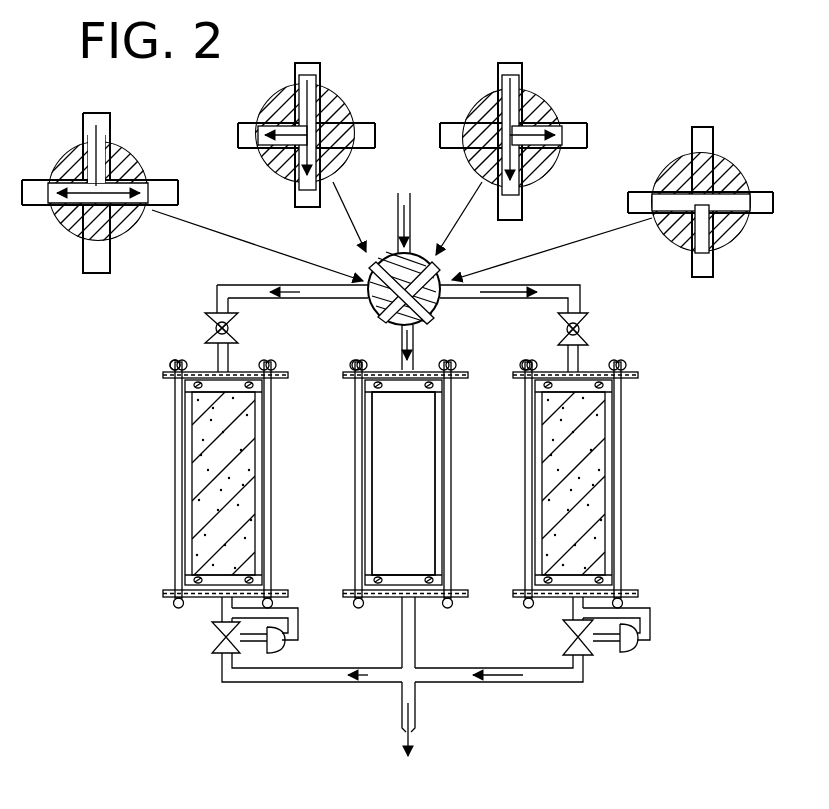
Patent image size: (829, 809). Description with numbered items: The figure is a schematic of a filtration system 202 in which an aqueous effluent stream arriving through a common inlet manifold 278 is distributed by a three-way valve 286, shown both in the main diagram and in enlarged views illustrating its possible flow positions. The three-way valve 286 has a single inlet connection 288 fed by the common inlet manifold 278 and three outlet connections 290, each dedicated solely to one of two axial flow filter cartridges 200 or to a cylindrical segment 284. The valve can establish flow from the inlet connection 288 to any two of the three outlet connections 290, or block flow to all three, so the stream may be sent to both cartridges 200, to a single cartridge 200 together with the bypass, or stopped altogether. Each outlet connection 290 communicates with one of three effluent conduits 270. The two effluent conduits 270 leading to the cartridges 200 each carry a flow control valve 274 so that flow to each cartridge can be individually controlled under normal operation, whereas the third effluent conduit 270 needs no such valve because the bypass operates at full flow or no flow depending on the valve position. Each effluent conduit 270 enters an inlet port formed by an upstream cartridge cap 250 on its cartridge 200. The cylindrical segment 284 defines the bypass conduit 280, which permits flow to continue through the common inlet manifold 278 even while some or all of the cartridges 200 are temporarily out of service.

The axial flow filter cartridge 200 is at (182, 497).
The system 202 is at (640, 489).
The upstream cartridge cap 250 is at (202, 368).
The effluent conduit 270 is at (230, 365).
The flow control valve 274 is at (238, 328).
The common inlet manifold 278 is at (412, 216).
The bypass conduit 280 is at (405, 443).
The cylindrical segment 284 is at (373, 545).
The three-way valve 286 is at (445, 270).
The inlet connection 288 is at (380, 253).
The outlet connection 290 is at (452, 280).